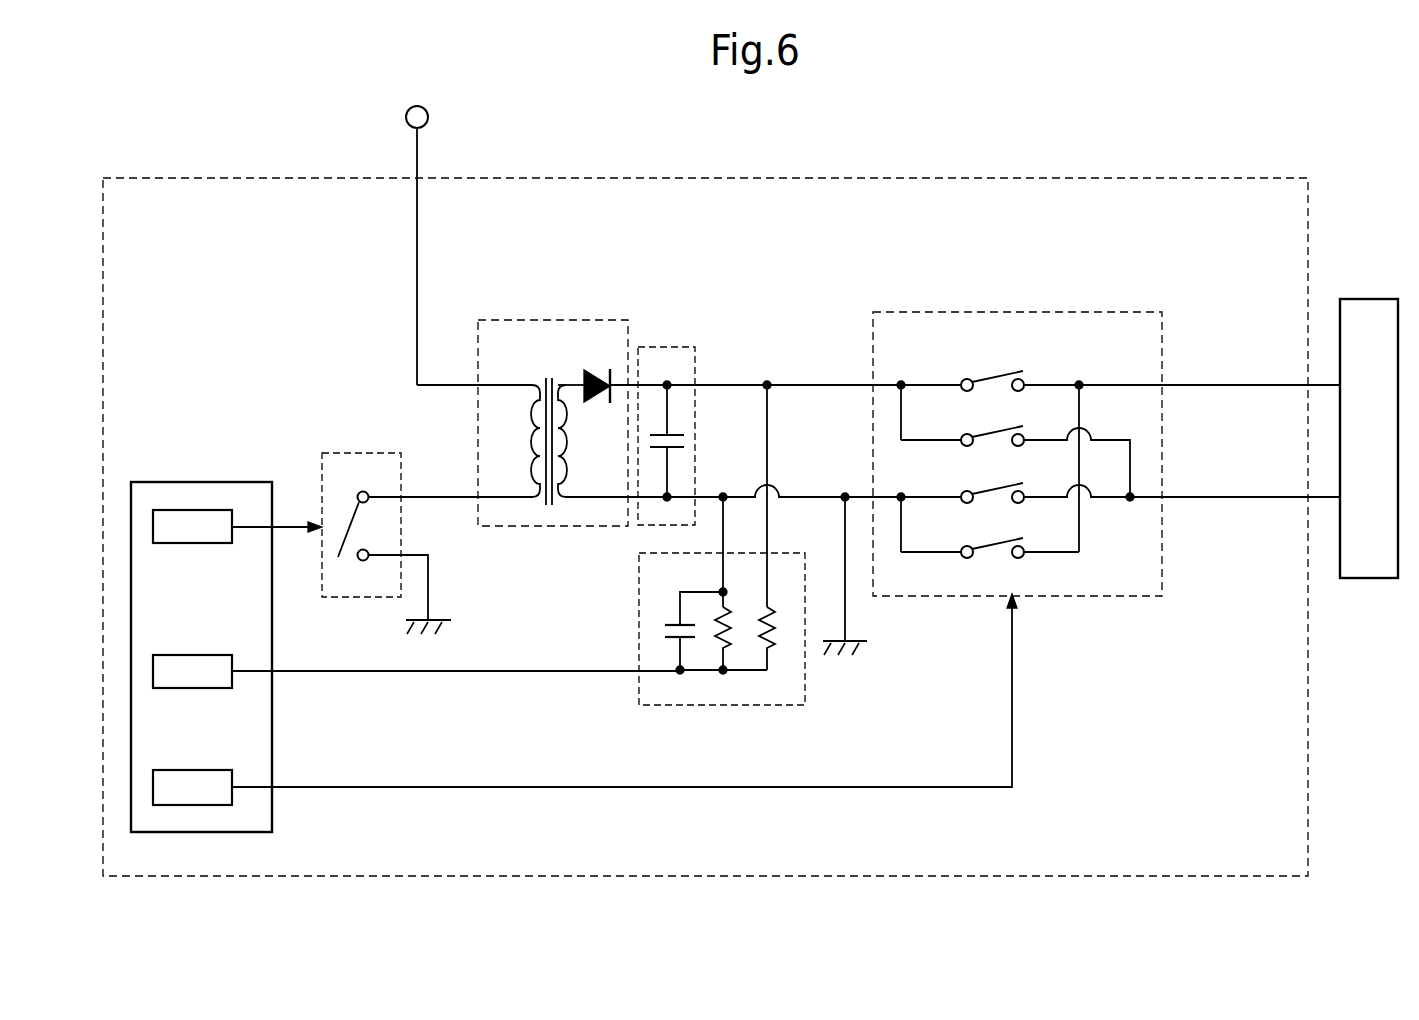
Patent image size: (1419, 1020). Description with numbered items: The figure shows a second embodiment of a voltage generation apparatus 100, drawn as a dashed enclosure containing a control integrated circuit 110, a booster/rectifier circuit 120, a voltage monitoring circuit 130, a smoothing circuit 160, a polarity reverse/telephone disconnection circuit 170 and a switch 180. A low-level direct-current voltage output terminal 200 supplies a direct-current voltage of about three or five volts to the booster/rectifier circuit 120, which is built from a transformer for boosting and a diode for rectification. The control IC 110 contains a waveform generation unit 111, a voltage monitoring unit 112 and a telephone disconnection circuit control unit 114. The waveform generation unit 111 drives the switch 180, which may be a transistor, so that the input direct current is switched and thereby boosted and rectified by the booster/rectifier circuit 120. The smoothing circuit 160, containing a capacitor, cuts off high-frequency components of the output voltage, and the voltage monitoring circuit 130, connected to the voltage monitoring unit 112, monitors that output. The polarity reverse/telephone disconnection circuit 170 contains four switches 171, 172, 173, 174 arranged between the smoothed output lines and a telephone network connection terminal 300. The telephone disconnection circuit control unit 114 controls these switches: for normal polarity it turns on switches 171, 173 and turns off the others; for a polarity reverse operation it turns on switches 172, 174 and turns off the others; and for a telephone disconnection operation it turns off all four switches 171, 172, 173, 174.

The voltage generation apparatus 100 is at (164, 178).
The control integrated circuit 110 is at (200, 482).
The waveform generation unit 111 is at (170, 543).
The voltage monitoring unit 112 is at (172, 655).
The telephone disconnection circuit control unit 114 is at (172, 770).
The booster/rectifier circuit 120 is at (540, 320).
The voltage monitoring circuit 130 is at (638, 592).
The smoothing circuit 160 is at (672, 346).
The polarity reverse/telephone disconnection circuit 170 is at (1079, 401).
The switch 171 is at (1002, 374).
The switch 172 is at (1002, 429).
The switch 173 is at (1002, 486).
The switch 174 is at (1002, 541).
The switch 180 is at (360, 453).
The low-level direct-current voltage output terminal 200 is at (427, 108).
The telephone network connection terminal 300 is at (1371, 299).